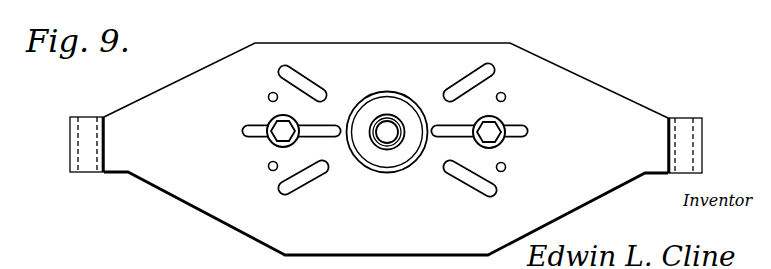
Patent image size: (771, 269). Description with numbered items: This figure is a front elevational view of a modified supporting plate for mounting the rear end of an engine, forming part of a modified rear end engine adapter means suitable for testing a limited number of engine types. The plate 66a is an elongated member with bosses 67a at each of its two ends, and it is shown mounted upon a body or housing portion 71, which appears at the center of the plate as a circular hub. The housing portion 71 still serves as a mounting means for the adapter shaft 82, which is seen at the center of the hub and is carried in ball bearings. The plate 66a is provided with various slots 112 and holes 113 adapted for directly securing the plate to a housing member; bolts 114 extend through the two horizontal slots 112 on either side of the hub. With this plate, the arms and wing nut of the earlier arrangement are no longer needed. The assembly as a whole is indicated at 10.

The transverse bar assembly 10 is at (387, 137).
The plate 66a is at (578, 80).
The bosses 67a is at (721, 126).
The body or housing portion 71 is at (387, 142).
The adapter shaft 82 is at (387, 138).
The slots 112 is at (304, 80).
The holes 113 is at (268, 94).
The bolts 114 is at (280, 129).